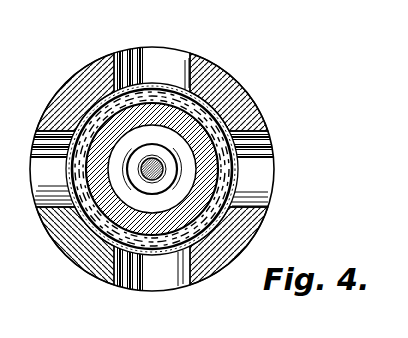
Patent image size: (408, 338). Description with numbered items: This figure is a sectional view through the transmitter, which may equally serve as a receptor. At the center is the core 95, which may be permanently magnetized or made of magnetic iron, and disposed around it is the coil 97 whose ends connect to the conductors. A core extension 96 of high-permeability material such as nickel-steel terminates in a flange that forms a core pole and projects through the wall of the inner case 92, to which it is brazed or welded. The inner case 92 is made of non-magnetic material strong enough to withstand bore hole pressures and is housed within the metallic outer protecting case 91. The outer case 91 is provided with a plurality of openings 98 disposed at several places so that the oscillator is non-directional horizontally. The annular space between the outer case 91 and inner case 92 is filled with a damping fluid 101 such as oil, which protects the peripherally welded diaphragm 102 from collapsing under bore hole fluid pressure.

The outer protecting case 91 is at (237, 233).
The inner case 92 is at (190, 222).
The core 95 is at (140, 170).
The core extension 96 is at (213, 87).
The coil 97 is at (141, 178).
The openings 98 is at (166, 57).
The fluid 101 is at (227, 110).
The diaphragm 102 is at (239, 184).